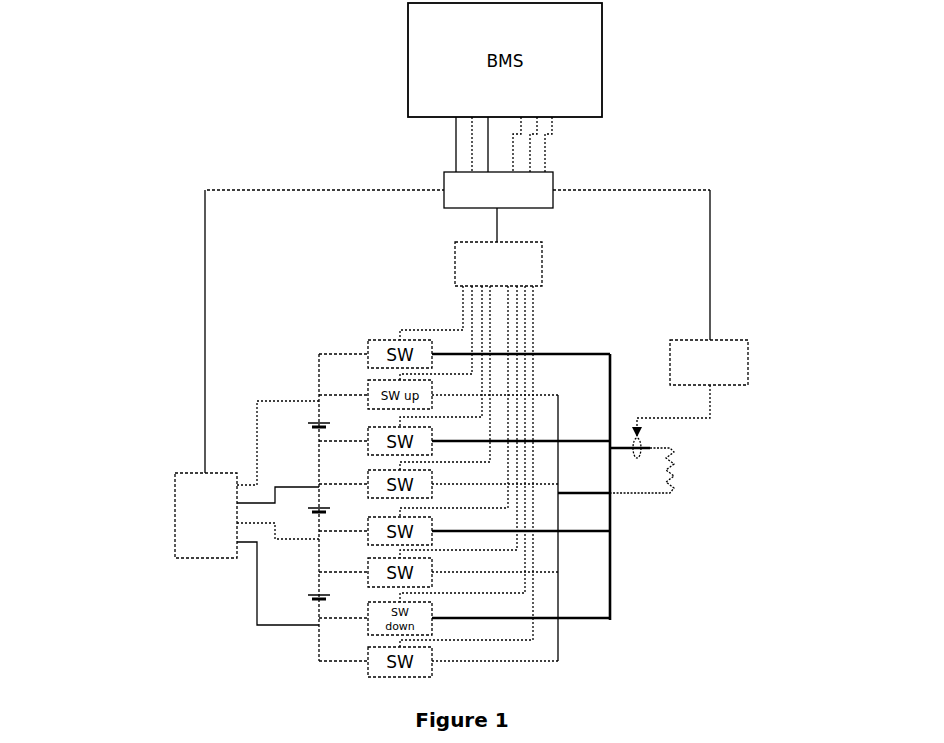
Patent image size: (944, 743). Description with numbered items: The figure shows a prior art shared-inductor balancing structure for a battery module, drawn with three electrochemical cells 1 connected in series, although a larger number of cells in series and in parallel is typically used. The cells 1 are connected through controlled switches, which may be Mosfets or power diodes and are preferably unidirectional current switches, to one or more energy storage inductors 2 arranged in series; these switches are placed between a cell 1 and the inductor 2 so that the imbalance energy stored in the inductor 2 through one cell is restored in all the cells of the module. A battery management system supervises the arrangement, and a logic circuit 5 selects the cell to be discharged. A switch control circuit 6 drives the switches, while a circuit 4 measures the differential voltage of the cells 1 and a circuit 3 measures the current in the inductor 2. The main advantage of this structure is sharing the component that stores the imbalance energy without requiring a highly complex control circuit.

The electrochemical cells 1 is at (305, 505).
The energy storage inductor 2 is at (673, 475).
The circuit for measuring the current in the inductor 3 is at (690, 399).
The circuit for measuring the differential voltage of the cells 4 is at (247, 513).
The logic circuit for selecting the cell to be discharged 5 is at (498, 190).
The switch control circuit 6 is at (498, 264).